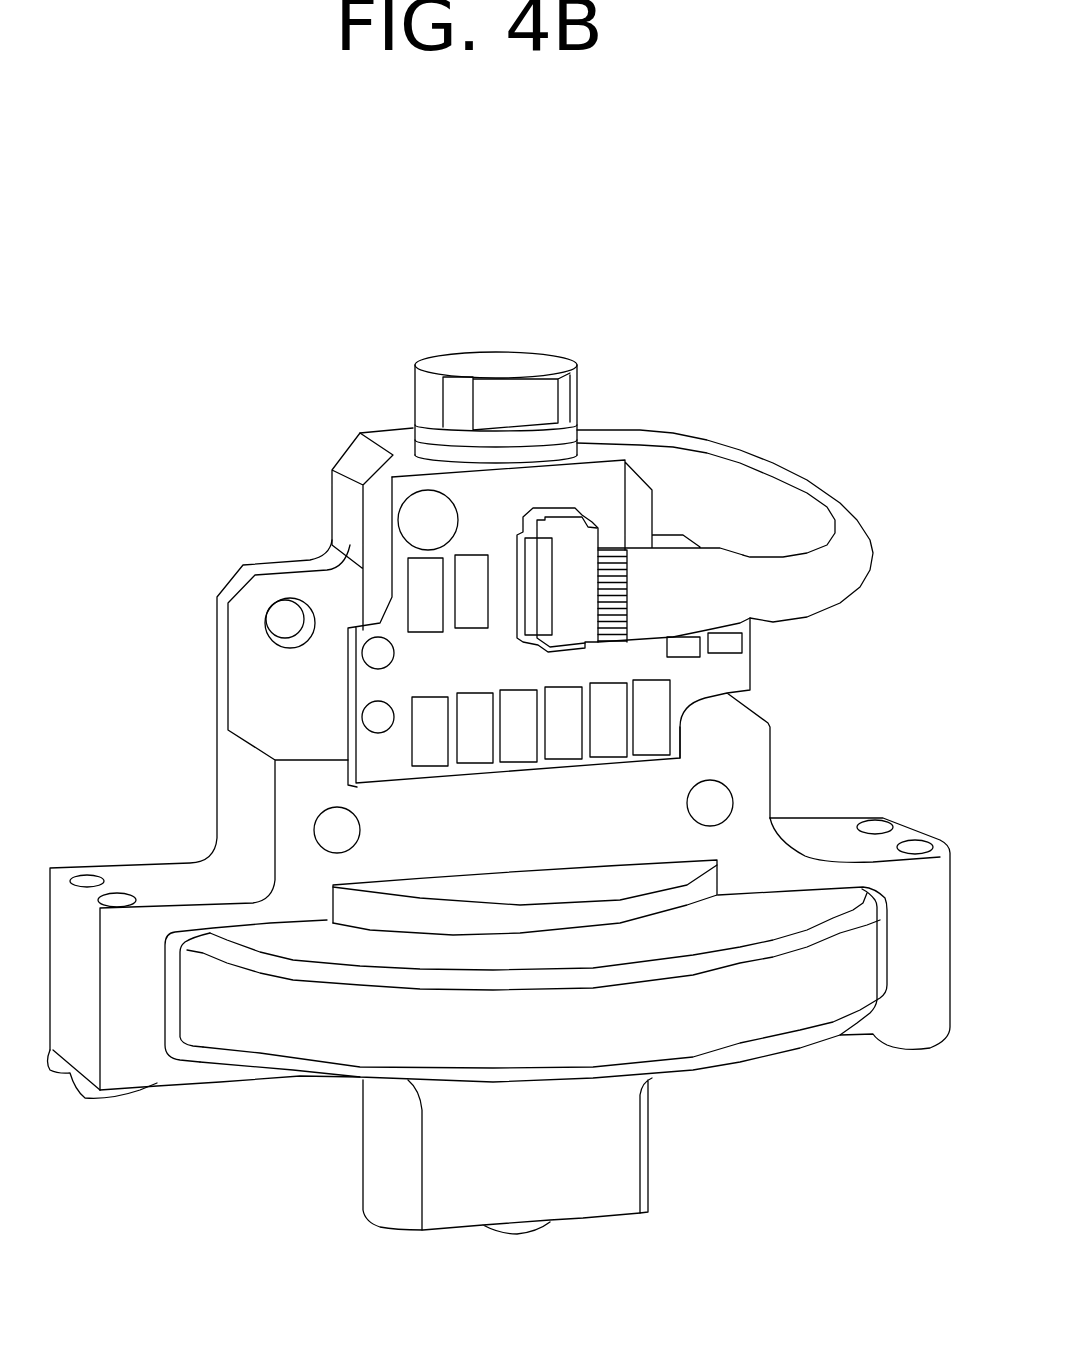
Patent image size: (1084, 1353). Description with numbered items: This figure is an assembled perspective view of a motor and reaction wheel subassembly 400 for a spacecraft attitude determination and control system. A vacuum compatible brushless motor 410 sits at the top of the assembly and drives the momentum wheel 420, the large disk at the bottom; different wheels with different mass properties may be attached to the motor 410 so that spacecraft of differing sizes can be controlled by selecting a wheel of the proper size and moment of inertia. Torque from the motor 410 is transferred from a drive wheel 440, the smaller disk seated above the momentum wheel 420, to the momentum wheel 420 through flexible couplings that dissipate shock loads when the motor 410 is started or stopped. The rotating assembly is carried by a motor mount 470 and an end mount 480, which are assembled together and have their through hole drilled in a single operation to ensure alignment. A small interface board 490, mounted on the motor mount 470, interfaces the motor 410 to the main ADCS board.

The motor and reaction wheel subassembly 400 is at (147, 263).
The vacuum compatible brushless motor 410 is at (430, 403).
The momentum wheel 420 is at (733, 1018).
The drive wheel 440 is at (697, 890).
The motor mount 470 is at (235, 762).
The end mount 480 is at (393, 1180).
The small interface board 490 is at (735, 667).